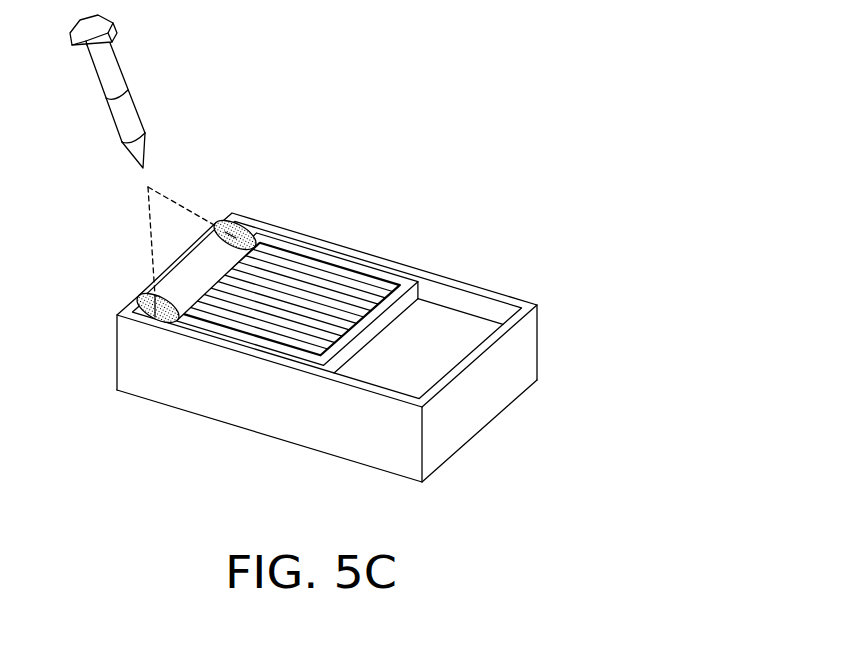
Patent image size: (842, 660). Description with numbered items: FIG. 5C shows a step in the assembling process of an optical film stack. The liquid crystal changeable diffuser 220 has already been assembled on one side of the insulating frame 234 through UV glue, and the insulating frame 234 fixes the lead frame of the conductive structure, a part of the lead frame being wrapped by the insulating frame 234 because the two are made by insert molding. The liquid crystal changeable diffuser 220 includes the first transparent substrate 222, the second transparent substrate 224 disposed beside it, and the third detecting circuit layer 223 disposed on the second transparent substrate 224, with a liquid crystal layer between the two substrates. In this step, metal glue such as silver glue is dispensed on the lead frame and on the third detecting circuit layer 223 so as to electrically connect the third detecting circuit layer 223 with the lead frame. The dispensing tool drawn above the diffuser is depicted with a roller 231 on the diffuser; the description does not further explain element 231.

The liquid crystal changeable diffuser 220 is at (338, 270).
The first transparent substrate 222 is at (430, 320).
The third detecting circuit layer 223 is at (290, 270).
The second transparent substrate 224 is at (342, 290).
The roller 231 is at (237, 232).
The insulating frame 234 is at (472, 415).